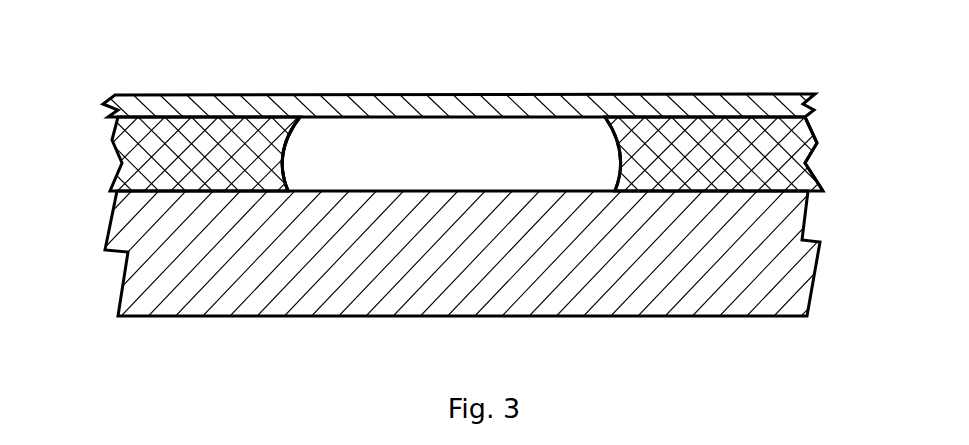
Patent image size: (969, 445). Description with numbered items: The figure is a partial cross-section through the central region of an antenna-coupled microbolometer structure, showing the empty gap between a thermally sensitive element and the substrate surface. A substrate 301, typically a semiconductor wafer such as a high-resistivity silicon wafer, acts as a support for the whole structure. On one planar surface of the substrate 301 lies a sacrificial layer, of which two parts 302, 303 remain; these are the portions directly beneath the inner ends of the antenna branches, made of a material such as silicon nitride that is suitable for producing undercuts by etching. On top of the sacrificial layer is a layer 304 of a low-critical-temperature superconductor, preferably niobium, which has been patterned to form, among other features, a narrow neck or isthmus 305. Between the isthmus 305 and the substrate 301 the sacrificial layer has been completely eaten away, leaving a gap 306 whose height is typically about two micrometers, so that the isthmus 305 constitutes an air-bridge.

The substrate 301 is at (810, 268).
The sacrificial layer part 302 is at (815, 142).
The sacrificial layer part 303 is at (128, 165).
The layer of low-Tc superconductor material 304 is at (723, 95).
The narrow neck or isthmus 305 is at (610, 80).
The gap 306 is at (320, 147).